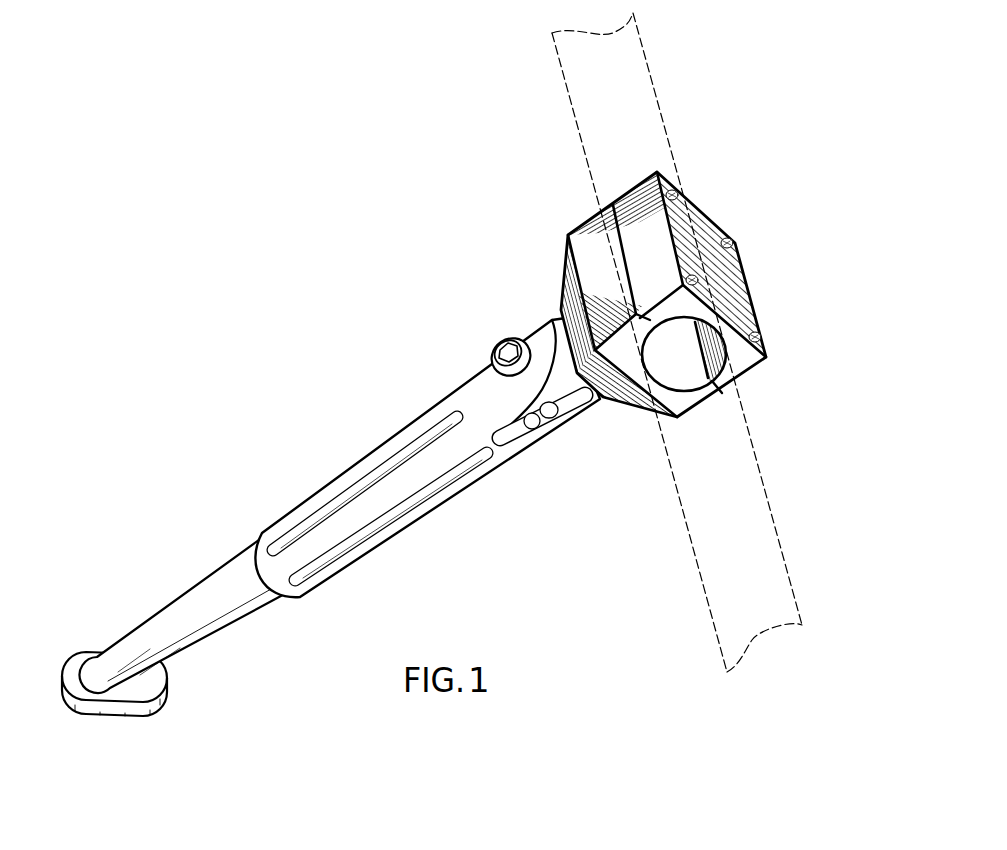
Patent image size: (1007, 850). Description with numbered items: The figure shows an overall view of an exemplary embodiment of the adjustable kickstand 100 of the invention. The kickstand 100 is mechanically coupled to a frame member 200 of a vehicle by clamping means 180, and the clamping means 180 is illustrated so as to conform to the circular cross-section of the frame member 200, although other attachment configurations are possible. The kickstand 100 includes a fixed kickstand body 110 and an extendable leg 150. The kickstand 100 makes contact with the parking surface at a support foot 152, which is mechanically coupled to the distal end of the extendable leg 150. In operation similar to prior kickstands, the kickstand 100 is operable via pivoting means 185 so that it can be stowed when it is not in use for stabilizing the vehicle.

The kickstand 100 is at (357, 360).
The fixed kickstand body 110 is at (448, 500).
The extendable leg 150 is at (232, 633).
The support foot 152 is at (60, 676).
The clamping means 180 is at (775, 297).
The pivoting means 185 is at (493, 335).
The frame member 200 is at (753, 455).